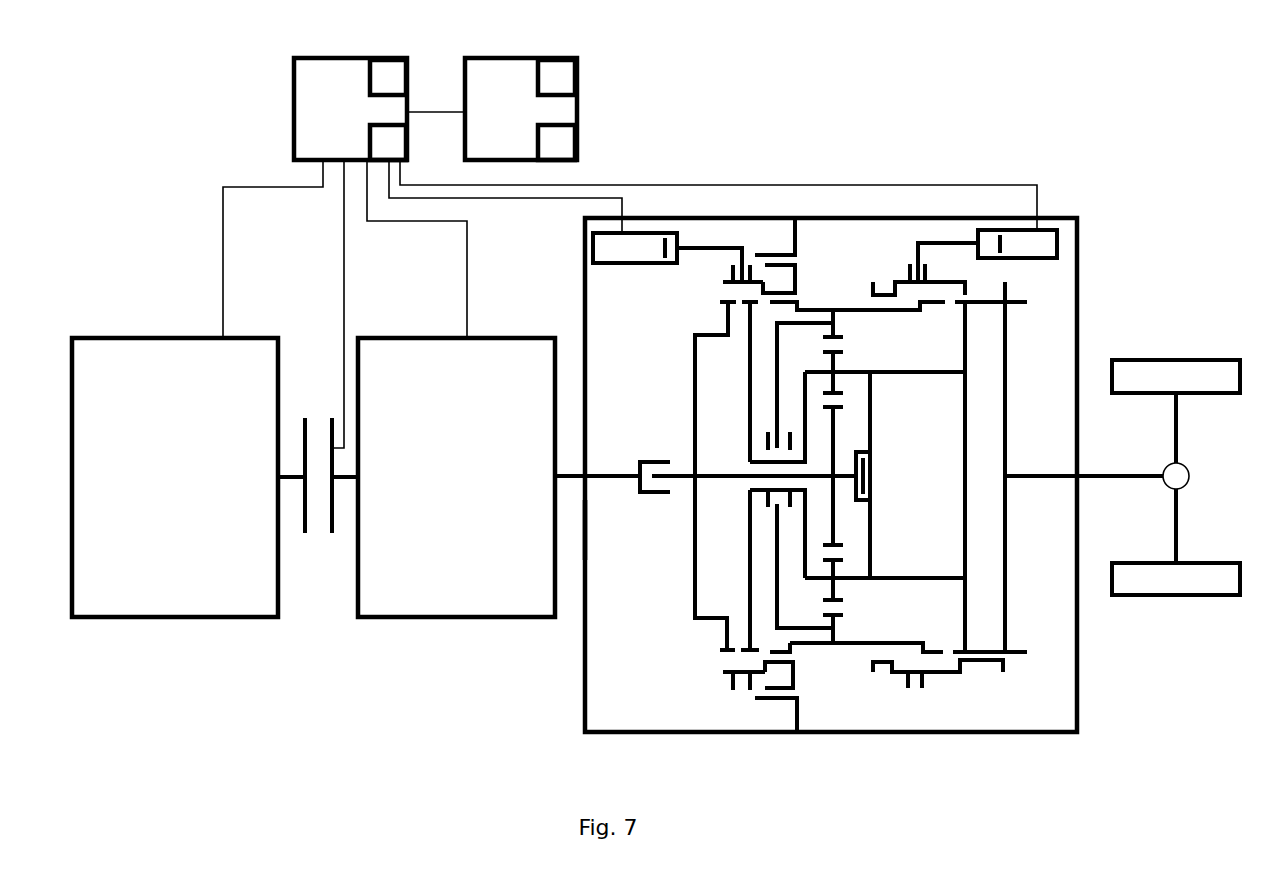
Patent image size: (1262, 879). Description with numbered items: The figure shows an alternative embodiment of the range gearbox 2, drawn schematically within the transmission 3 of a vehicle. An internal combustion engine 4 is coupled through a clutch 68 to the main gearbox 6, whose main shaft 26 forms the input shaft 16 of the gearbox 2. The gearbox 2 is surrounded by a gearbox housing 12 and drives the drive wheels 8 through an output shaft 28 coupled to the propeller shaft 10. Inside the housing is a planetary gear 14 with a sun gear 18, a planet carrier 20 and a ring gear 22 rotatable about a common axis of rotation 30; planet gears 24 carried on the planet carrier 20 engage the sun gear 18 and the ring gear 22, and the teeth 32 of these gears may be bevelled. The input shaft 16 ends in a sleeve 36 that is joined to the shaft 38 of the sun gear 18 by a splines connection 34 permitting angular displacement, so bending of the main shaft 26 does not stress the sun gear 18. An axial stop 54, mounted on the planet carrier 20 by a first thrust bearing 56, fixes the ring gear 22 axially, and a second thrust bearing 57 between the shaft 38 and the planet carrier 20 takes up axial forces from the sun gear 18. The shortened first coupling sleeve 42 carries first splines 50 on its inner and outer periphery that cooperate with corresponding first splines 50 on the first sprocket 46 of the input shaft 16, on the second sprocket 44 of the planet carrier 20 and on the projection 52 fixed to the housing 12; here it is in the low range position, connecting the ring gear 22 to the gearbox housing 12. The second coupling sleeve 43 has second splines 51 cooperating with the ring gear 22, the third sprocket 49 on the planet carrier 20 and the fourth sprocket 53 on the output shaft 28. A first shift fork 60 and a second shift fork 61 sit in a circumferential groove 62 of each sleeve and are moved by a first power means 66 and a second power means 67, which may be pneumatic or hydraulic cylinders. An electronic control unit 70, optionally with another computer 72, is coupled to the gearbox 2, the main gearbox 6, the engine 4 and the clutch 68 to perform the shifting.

The gearbox 2 is at (855, 158).
The transmission 3 is at (142, 270).
The internal combustion engine 4 is at (160, 618).
The main gearbox 6 is at (455, 618).
The drive wheels 8 is at (1165, 358).
The propeller shaft 10 is at (1090, 472).
The gearbox housing 12 is at (985, 218).
The planetary gear 14 is at (904, 512).
The input shaft 16 is at (583, 532).
The sun gear 18 is at (836, 490).
The planet carrier 20 is at (1007, 405).
The ring gear 22 is at (838, 315).
The planet gears 24 is at (838, 360).
The main shaft 26 is at (583, 470).
The output shaft 28 is at (1068, 482).
The axis of rotation 30 is at (818, 465).
The teeth 32 is at (840, 548).
The splines connection 34 is at (650, 463).
The sleeve 36 is at (615, 482).
The shaft of the sun gear 38 is at (658, 485).
The first coupling sleeve 42 is at (800, 272).
The second coupling sleeve 43 is at (1007, 284).
The second sprocket 44 is at (748, 365).
The first sprocket 46 is at (695, 560).
The third sprocket 49 is at (968, 325).
The first splines 50 is at (797, 658).
The second splines 51 is at (977, 655).
The projection 52 is at (798, 242).
The fourth sprocket 53 is at (968, 373).
The axial stop 54 is at (783, 357).
The first thrust bearing 56 is at (773, 510).
The second thrust bearing 57 is at (869, 449).
The first shift fork 60 is at (712, 246).
The second shift fork 61 is at (913, 280).
The circumferential groove 62 is at (742, 682).
The first power means 66 is at (646, 232).
The second power means 67 is at (1057, 240).
The clutch 68 is at (305, 533).
The electronic control unit 70 is at (293, 88).
The computer 72 is at (577, 108).